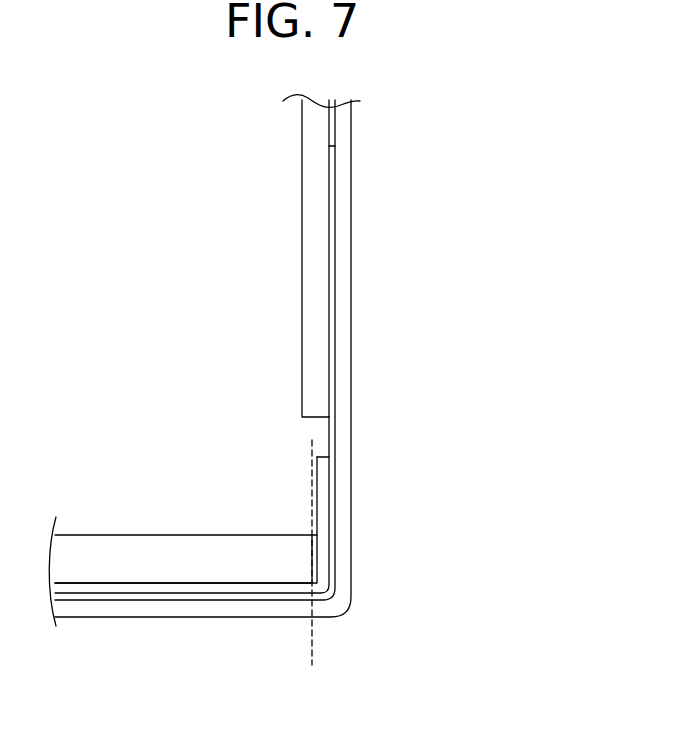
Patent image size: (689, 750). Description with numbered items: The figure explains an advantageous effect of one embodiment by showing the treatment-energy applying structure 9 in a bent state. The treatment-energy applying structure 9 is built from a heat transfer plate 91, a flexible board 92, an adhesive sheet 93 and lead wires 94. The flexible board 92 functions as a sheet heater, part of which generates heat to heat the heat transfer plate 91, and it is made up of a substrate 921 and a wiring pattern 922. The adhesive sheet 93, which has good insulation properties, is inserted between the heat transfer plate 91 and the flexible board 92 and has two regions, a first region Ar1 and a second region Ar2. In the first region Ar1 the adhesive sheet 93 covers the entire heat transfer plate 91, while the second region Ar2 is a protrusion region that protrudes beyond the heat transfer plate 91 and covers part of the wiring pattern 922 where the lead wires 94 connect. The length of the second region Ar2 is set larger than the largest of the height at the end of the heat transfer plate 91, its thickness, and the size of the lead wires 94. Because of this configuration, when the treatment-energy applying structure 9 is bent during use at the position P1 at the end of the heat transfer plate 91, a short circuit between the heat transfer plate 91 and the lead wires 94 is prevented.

The treatment-energy applying structure 9 is at (150, 474).
The heat transfer plate 91 is at (218, 533).
The flexible board 92 is at (203, 406).
The substrate 921 is at (255, 665).
The wiring pattern 922 is at (217, 598).
The adhesive sheet 93 is at (320, 503).
The lead wires 94 is at (322, 257).
The first region Ar1 is at (233, 580).
The second region Ar2 is at (311, 467).
The position P1 is at (315, 643).